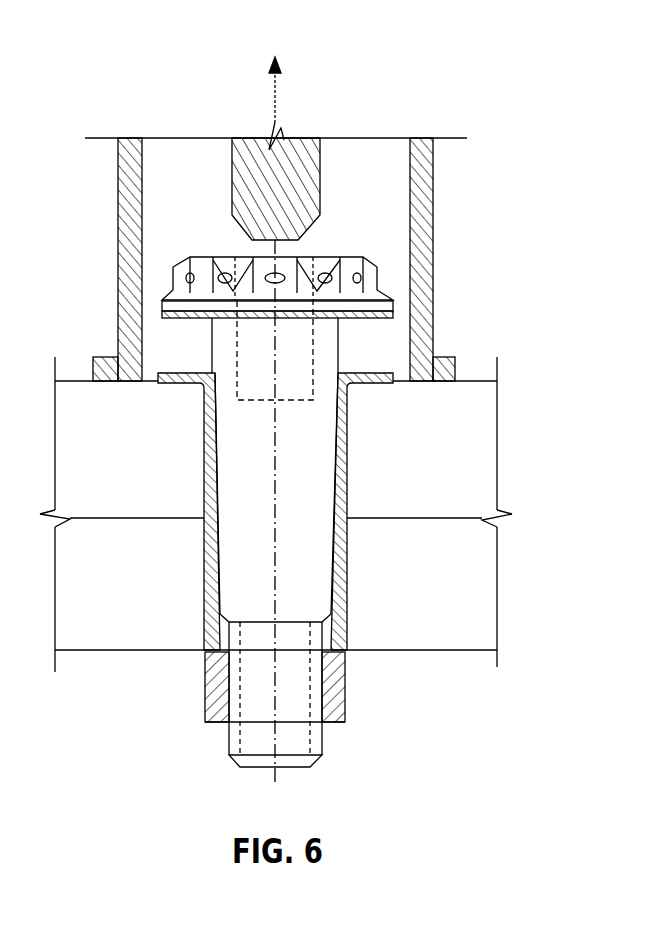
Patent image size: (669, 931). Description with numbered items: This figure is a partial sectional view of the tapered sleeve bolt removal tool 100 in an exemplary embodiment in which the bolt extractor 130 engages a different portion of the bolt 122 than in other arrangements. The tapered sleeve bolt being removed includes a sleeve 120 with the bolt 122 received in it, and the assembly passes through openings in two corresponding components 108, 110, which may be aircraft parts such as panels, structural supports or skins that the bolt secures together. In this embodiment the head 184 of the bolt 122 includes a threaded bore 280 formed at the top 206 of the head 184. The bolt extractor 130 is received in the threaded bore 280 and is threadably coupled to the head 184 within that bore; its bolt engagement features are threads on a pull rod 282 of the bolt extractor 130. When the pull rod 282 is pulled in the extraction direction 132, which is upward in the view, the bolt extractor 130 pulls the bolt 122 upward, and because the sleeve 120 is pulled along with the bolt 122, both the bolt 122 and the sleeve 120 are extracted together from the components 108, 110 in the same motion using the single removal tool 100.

The tapered sleeve bolt removal tool 100 is at (512, 133).
The component 108 is at (478, 475).
The component 110 is at (477, 587).
The sleeve 120 is at (340, 580).
The bolt 122 is at (316, 498).
The bolt extractor 130 is at (380, 103).
The extraction direction 132 is at (276, 99).
The head 184 is at (352, 280).
The top 206 is at (340, 256).
The threaded bore 280 is at (306, 347).
The pull rod 282 is at (303, 177).